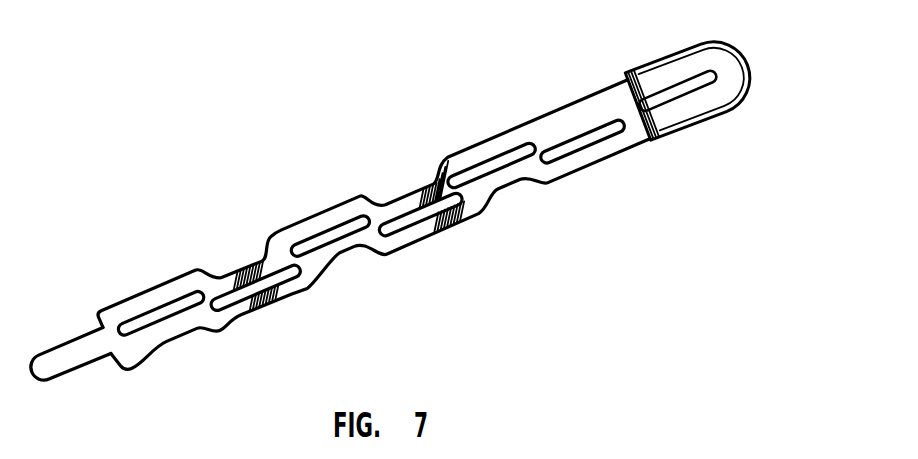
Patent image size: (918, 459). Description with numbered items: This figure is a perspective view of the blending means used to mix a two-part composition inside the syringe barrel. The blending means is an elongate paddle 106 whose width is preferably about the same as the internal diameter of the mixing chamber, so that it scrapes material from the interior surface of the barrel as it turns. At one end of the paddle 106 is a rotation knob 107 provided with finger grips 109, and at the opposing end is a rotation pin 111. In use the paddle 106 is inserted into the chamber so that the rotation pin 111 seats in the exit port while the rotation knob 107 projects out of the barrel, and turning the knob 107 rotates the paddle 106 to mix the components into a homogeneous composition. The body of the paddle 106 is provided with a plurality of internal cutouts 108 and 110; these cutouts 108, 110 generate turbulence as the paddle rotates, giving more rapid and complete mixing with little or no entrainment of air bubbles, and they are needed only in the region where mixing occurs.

The paddle 106 is at (505, 219).
The rotation knob 107 is at (745, 63).
The internal cutouts 108 is at (310, 247).
The finger grips 109 is at (684, 46).
The internal cutouts 110 is at (382, 186).
The rotation pin 111 is at (66, 358).